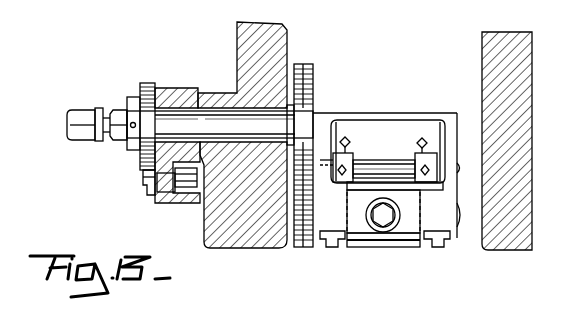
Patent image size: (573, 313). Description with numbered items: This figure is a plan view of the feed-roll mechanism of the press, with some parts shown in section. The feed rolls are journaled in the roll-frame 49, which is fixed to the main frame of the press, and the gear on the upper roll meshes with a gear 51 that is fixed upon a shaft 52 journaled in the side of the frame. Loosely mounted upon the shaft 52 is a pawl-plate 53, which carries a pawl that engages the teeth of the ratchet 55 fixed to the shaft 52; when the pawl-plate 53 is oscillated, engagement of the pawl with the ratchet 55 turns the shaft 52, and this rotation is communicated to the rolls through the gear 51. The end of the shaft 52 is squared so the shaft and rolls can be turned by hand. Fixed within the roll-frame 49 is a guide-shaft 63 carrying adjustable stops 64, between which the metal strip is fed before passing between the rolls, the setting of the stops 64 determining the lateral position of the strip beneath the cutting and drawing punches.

The roll-frame 49 is at (385, 128).
The gear 51 is at (313, 72).
The shaft 52 is at (232, 122).
The pawl-plate 53 is at (163, 92).
The ratchet 55 is at (140, 86).
The guide-shaft 63 is at (392, 153).
The adjustable stops 64 is at (352, 155).